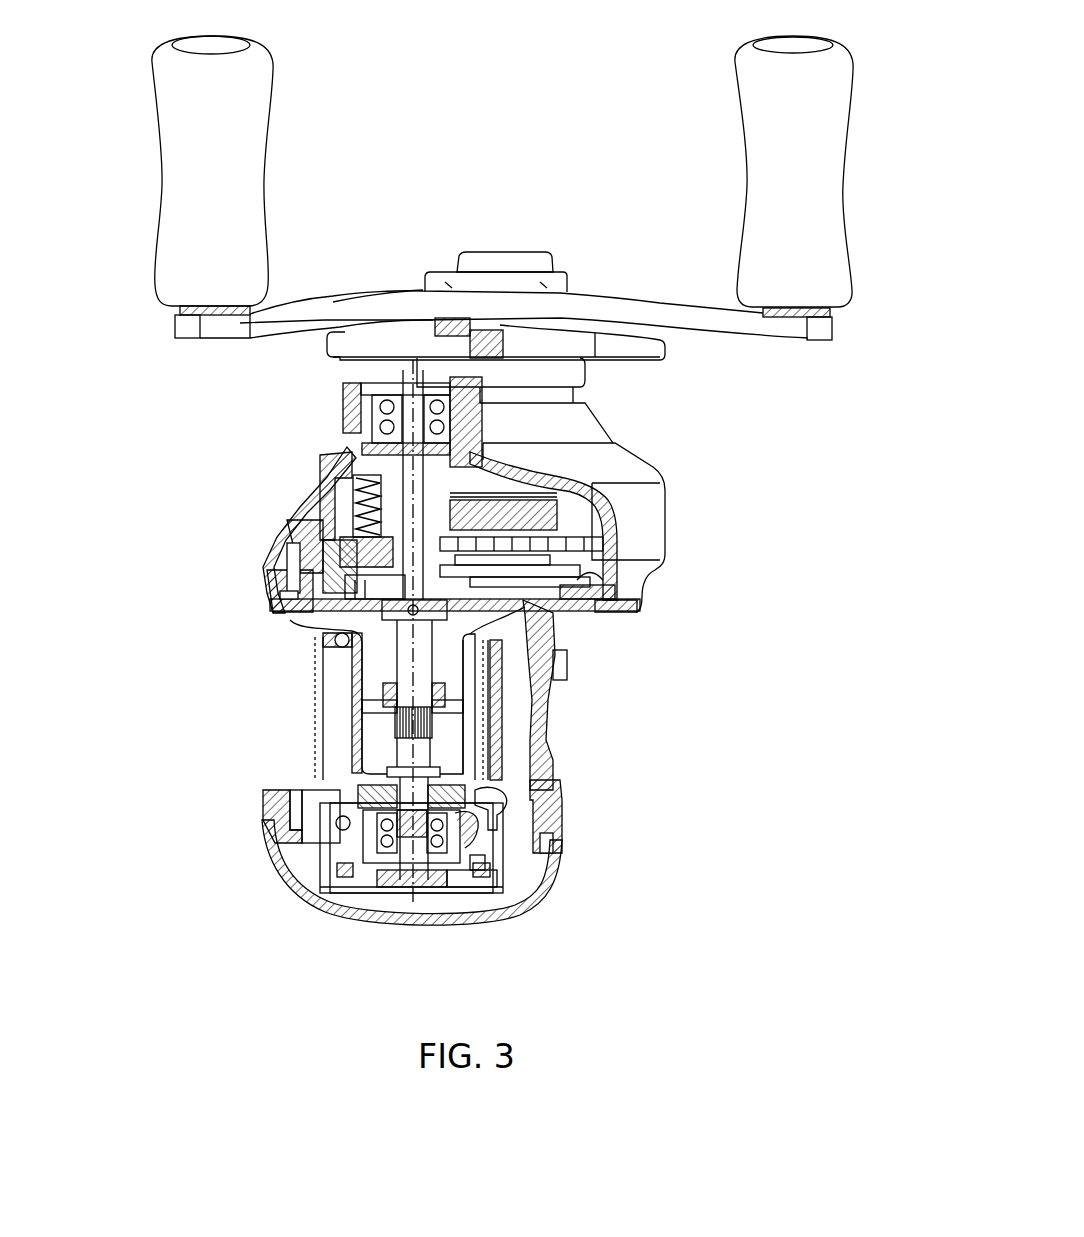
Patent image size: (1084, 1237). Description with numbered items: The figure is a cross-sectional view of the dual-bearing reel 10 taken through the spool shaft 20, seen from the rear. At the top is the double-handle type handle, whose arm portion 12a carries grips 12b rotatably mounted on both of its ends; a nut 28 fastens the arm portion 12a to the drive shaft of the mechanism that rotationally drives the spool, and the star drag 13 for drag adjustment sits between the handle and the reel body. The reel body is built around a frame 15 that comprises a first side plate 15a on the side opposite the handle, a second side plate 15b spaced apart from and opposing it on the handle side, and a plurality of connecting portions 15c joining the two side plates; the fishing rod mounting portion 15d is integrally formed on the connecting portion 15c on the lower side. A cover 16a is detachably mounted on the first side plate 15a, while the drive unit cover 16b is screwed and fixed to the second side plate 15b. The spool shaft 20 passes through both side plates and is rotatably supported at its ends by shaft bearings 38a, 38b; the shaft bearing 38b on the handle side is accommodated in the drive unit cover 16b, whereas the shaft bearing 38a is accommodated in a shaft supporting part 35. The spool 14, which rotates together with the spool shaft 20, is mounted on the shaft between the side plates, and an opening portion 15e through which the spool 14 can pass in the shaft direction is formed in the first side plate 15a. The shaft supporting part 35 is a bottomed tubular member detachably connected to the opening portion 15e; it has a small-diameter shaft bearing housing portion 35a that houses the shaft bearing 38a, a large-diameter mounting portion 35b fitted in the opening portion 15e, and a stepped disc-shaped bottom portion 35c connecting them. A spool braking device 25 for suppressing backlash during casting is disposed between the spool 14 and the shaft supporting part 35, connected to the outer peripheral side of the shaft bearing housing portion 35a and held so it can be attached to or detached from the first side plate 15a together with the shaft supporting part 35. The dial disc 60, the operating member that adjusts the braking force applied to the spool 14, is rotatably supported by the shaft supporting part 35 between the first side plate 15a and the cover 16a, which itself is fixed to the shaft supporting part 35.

The dual-bearing reel 10 is at (245, 880).
The arm portion 12a is at (641, 301).
The grips 12b is at (250, 78).
The star drag 13 is at (322, 345).
The spool 14 is at (350, 680).
The frame 15 is at (247, 596).
The first side plate 15a is at (265, 812).
The second side plate 15b is at (600, 614).
The connecting portions 15c is at (548, 783).
The fishing rod mounting portion 15d is at (549, 708).
The opening portion 15e is at (512, 818).
The cover 16a is at (320, 912).
The drive unit cover 16b is at (283, 512).
The spool shaft 20 is at (397, 752).
The spool braking device 25 is at (316, 824).
The nut 28 is at (497, 250).
The shaft supporting part 35 is at (460, 900).
The shaft bearing housing portion 35a is at (505, 870).
The mounting portion 35b is at (472, 834).
The bottom portion 35c is at (500, 878).
The shaft bearing 38a is at (352, 822).
The shaft bearing 38b is at (352, 420).
The dial disc 60 is at (428, 893).